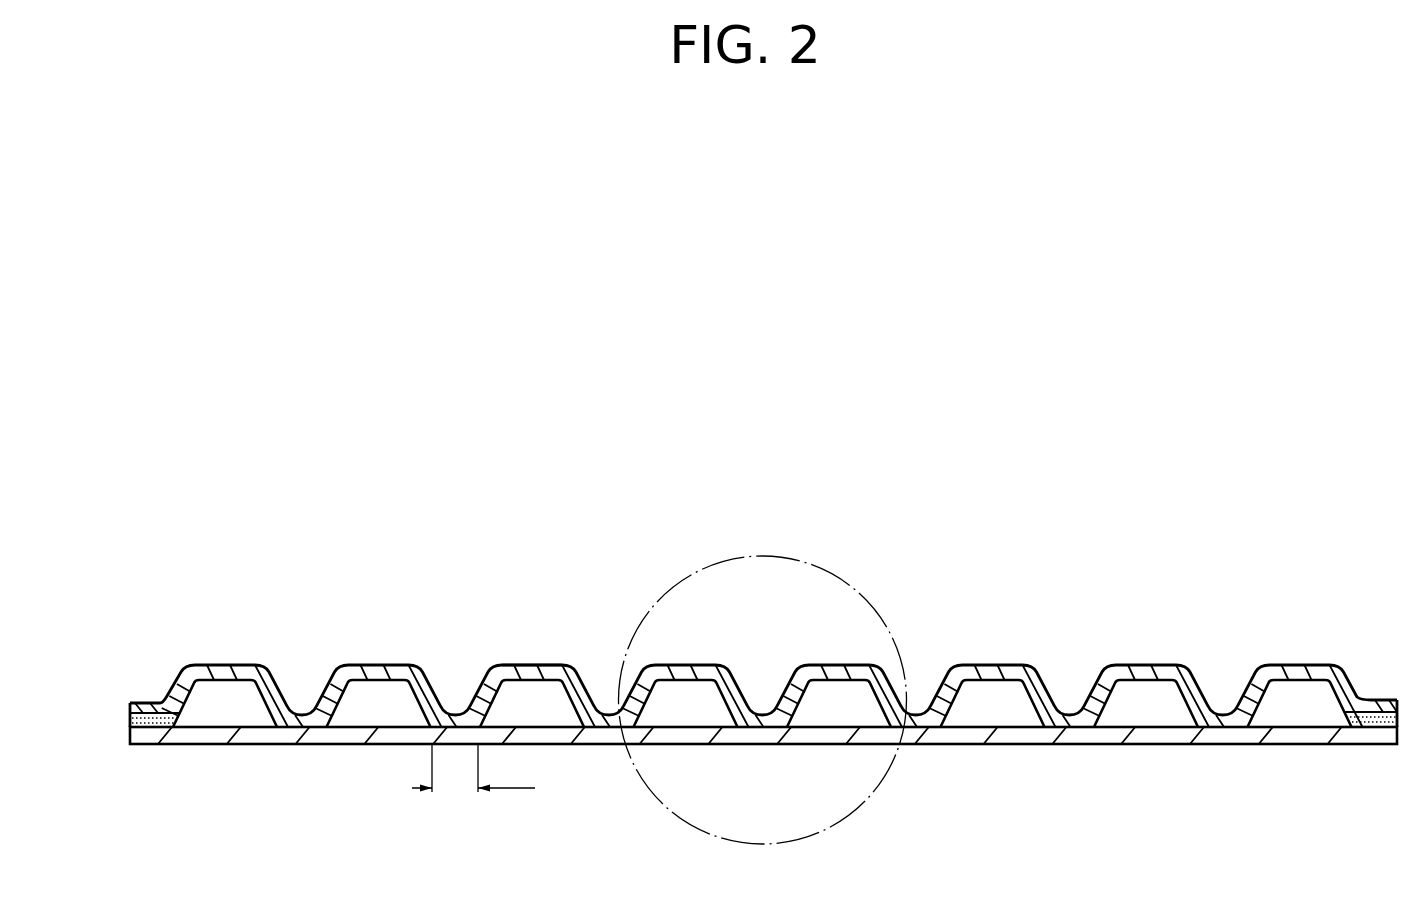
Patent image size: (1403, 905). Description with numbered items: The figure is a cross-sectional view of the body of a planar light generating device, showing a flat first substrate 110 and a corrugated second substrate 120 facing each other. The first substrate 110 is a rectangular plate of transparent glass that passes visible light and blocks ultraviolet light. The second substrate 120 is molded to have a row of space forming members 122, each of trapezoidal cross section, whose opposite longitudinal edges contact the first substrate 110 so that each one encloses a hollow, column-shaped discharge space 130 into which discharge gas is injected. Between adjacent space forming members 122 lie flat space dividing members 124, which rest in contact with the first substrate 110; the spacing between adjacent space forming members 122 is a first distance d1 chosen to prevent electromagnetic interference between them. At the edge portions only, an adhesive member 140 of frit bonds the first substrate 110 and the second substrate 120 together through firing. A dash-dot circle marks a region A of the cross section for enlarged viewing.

The first substrate 110 is at (132, 740).
The second substrate 120 is at (130, 703).
The space forming member 122 is at (533, 665).
The space dividing member 124 is at (452, 722).
The discharge space 130 is at (390, 700).
The adhesive member 140 is at (130, 720).
The enlarged region A is at (661, 597).
The first distance d1 is at (473, 768).